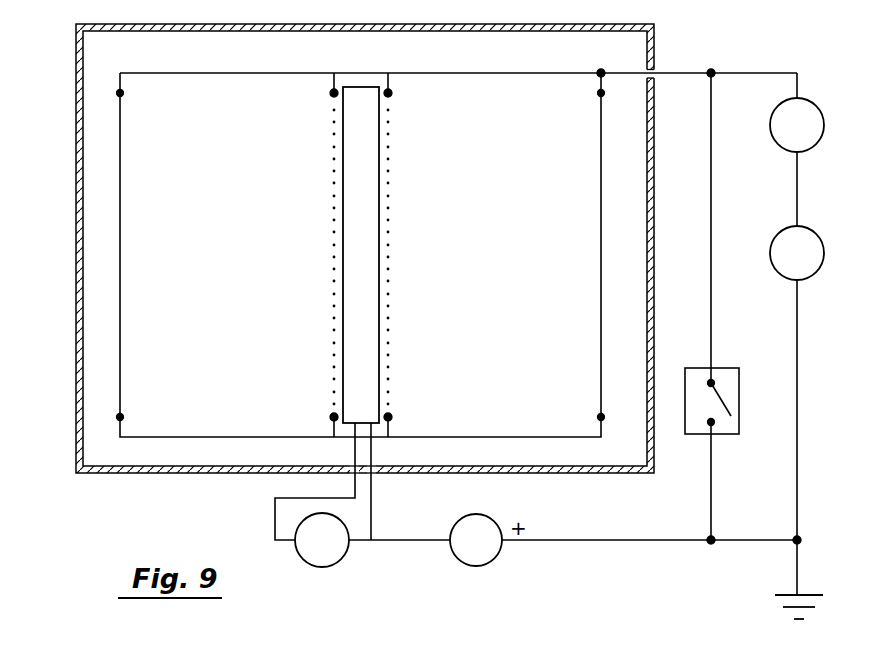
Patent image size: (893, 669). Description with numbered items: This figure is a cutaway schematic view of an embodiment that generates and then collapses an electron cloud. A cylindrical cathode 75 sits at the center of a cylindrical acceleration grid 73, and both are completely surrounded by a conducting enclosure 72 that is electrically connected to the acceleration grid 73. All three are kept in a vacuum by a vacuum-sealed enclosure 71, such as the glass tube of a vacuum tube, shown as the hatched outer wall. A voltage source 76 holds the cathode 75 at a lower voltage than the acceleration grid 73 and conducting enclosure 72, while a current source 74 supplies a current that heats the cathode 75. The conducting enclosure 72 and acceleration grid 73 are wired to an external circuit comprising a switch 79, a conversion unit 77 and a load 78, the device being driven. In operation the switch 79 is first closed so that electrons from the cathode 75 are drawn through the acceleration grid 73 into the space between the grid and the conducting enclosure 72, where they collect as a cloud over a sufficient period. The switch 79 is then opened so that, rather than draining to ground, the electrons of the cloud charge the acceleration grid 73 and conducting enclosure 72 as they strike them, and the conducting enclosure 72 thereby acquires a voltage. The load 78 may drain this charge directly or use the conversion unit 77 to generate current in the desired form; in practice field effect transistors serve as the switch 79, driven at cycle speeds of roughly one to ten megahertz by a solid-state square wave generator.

The vacuum-sealed enclosure 71 is at (77, 388).
The conducting enclosure 72 is at (120, 355).
The acceleration grid 73 is at (336, 395).
The current source 74 is at (338, 562).
The cathode 75 is at (381, 375).
The voltage source 76 is at (495, 558).
The conversion unit 77 is at (816, 107).
The load 78 is at (818, 236).
The switch 79 is at (739, 397).